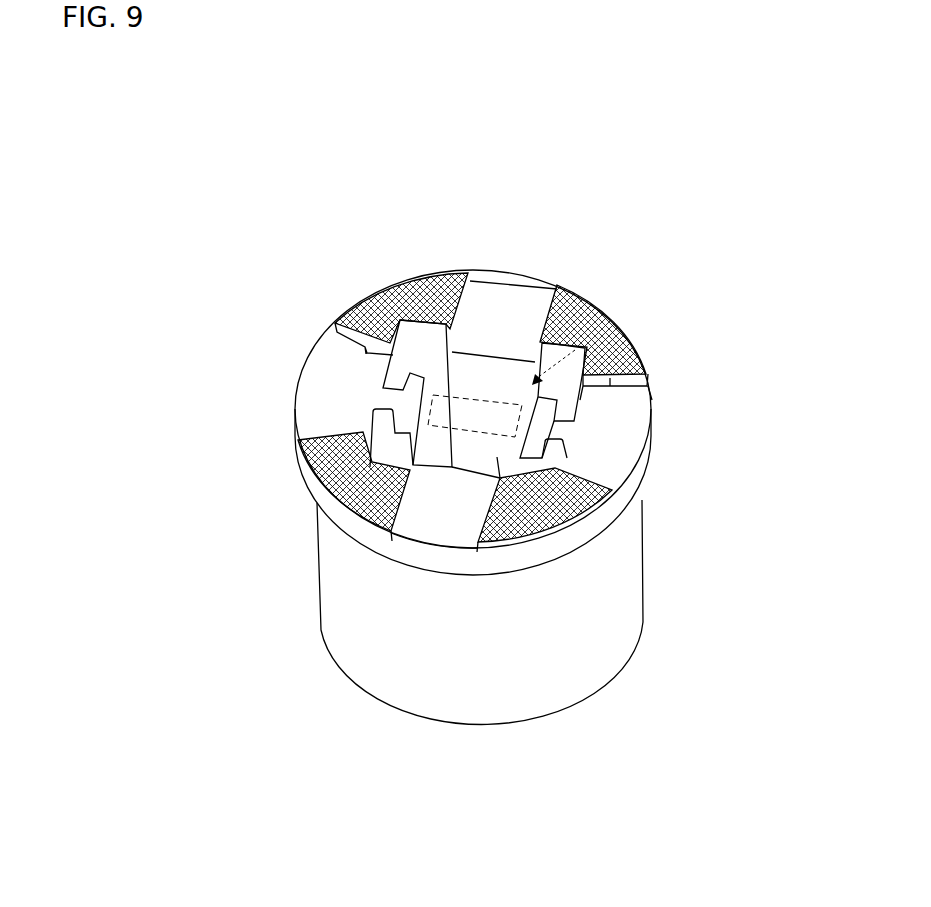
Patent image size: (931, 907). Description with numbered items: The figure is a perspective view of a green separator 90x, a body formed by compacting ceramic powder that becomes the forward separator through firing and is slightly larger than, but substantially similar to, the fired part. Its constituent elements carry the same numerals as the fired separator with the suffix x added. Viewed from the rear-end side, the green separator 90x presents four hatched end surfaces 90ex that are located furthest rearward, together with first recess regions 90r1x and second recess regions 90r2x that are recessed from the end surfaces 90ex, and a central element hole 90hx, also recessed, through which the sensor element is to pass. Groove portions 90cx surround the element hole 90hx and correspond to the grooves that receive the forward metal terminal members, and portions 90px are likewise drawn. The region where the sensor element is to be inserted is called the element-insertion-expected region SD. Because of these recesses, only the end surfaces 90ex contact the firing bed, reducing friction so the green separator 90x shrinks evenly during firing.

The green separator 90x is at (700, 531).
The end surfaces 90ex is at (388, 287).
The projecting portion 90px is at (363, 515).
The element hole 90hx is at (637, 337).
The groove portions 90cx is at (423, 338).
The first recess regions 90r1x is at (510, 296).
The second recess regions 90r2x is at (325, 378).
The element-insertion-expected region SD is at (540, 426).